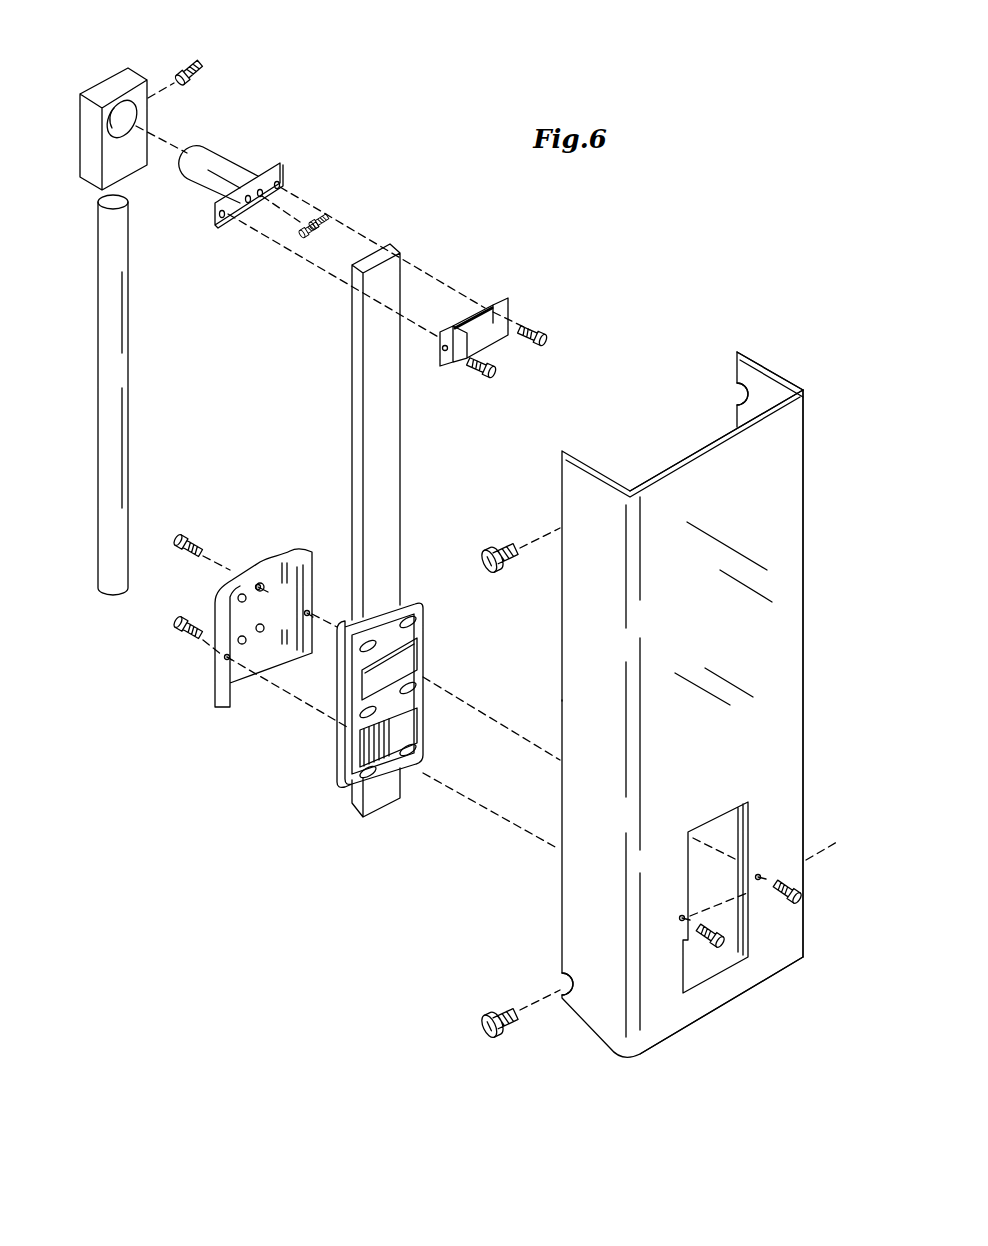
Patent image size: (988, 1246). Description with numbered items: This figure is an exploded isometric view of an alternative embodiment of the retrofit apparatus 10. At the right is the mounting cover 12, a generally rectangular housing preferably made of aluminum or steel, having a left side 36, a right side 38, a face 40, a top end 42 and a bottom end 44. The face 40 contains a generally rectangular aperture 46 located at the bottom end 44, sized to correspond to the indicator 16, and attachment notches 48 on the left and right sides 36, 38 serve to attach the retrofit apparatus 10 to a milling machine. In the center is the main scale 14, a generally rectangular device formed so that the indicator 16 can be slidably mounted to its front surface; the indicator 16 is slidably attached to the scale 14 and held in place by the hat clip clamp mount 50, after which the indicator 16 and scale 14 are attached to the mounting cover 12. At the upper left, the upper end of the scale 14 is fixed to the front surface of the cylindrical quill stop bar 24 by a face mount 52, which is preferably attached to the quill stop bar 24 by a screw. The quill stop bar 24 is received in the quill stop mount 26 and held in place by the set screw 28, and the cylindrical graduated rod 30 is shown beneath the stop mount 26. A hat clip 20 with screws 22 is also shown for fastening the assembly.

The retrofit apparatus 10 is at (716, 213).
The mounting cover 12 is at (669, 684).
The main scale 14 is at (390, 468).
The indicator 16 is at (408, 593).
The hat clip 20 is at (495, 333).
The screw 22 is at (553, 333).
The quill stop bar 24 is at (212, 153).
The quill stop mount 26 is at (115, 82).
The set screw 28 is at (190, 62).
The graduated rod 30 is at (105, 318).
The left side 36 is at (605, 1012).
The right side 38 is at (740, 368).
The face 40 is at (795, 543).
The top end 42 is at (700, 452).
The bottom end 44 is at (770, 977).
The aperture 46 is at (695, 967).
The attachment notches 48 is at (737, 387).
The hat clip clamp mount 50 is at (260, 558).
The face mount 52 is at (283, 182).